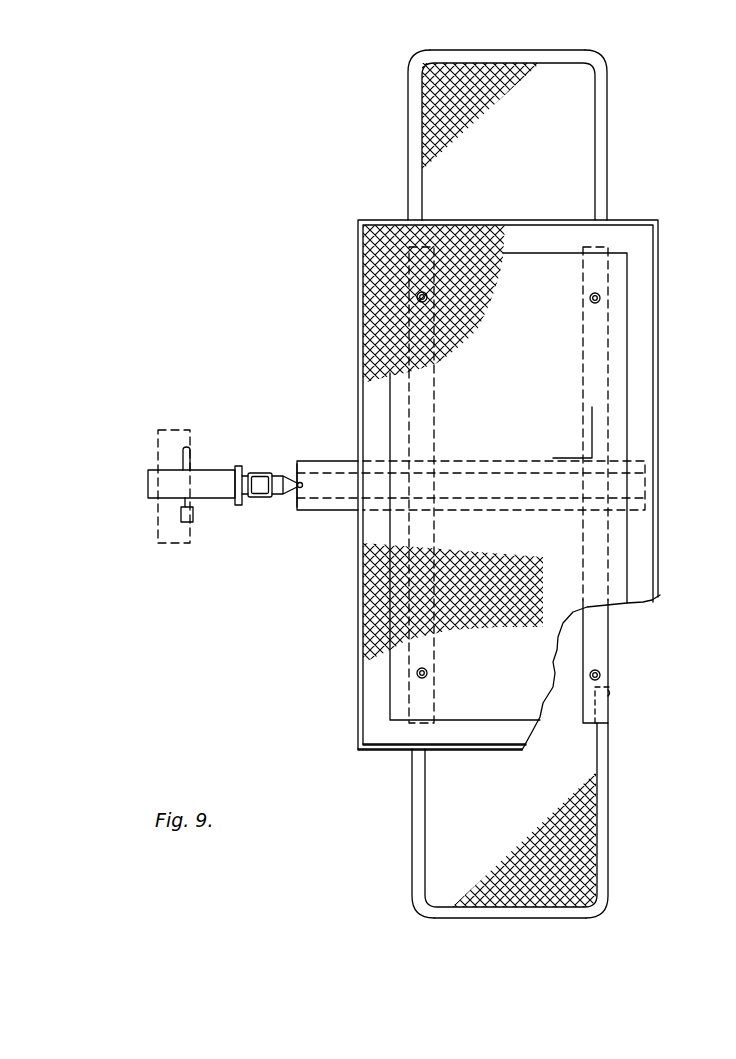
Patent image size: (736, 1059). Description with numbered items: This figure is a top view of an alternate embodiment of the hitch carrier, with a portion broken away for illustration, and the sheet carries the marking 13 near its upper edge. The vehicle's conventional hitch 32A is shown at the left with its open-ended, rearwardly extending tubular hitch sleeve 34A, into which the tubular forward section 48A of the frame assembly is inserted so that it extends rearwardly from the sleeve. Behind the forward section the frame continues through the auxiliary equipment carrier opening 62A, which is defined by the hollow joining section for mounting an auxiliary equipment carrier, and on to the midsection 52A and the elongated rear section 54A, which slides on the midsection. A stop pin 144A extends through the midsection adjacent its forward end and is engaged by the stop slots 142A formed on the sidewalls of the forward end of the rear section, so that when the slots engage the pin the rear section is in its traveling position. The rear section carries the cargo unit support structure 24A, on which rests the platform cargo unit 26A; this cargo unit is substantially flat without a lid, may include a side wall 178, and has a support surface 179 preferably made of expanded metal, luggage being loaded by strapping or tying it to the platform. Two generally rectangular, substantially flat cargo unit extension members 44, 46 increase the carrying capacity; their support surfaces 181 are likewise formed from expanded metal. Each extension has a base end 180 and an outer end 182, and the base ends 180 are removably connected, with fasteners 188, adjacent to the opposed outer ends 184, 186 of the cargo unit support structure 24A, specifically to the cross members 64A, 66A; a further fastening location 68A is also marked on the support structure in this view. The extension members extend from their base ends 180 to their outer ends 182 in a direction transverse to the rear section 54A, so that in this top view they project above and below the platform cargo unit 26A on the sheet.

The sheet reference 13 is at (724, 135).
The cargo unit support structure 24A is at (640, 618).
The platform cargo unit 26A is at (642, 350).
The hitch 32A is at (172, 415).
The hitch sleeve 34A is at (177, 495).
The cargo unit extension member 44 is at (602, 802).
The cargo unit extension member 46 is at (600, 165).
The forward section 48A is at (243, 470).
The midsection 52A is at (277, 493).
The rear section 54A is at (347, 460).
The auxiliary equipment carrier opening 62A is at (260, 478).
The cross member 64A is at (410, 678).
The cross member 66A is at (602, 635).
The fastener 68A is at (588, 298).
The stop slot 142A is at (297, 482).
The stop pin 144A is at (292, 488).
The side wall 178 is at (653, 272).
The support surface 179 is at (495, 237).
The base end 180 is at (610, 687).
The support surface 181 is at (500, 115).
The outer end 182 is at (550, 57).
The outer end of cargo unit support structure 184 is at (335, 717).
The outer end of cargo unit support structure 186 is at (342, 224).
The fastener 188 is at (610, 697).